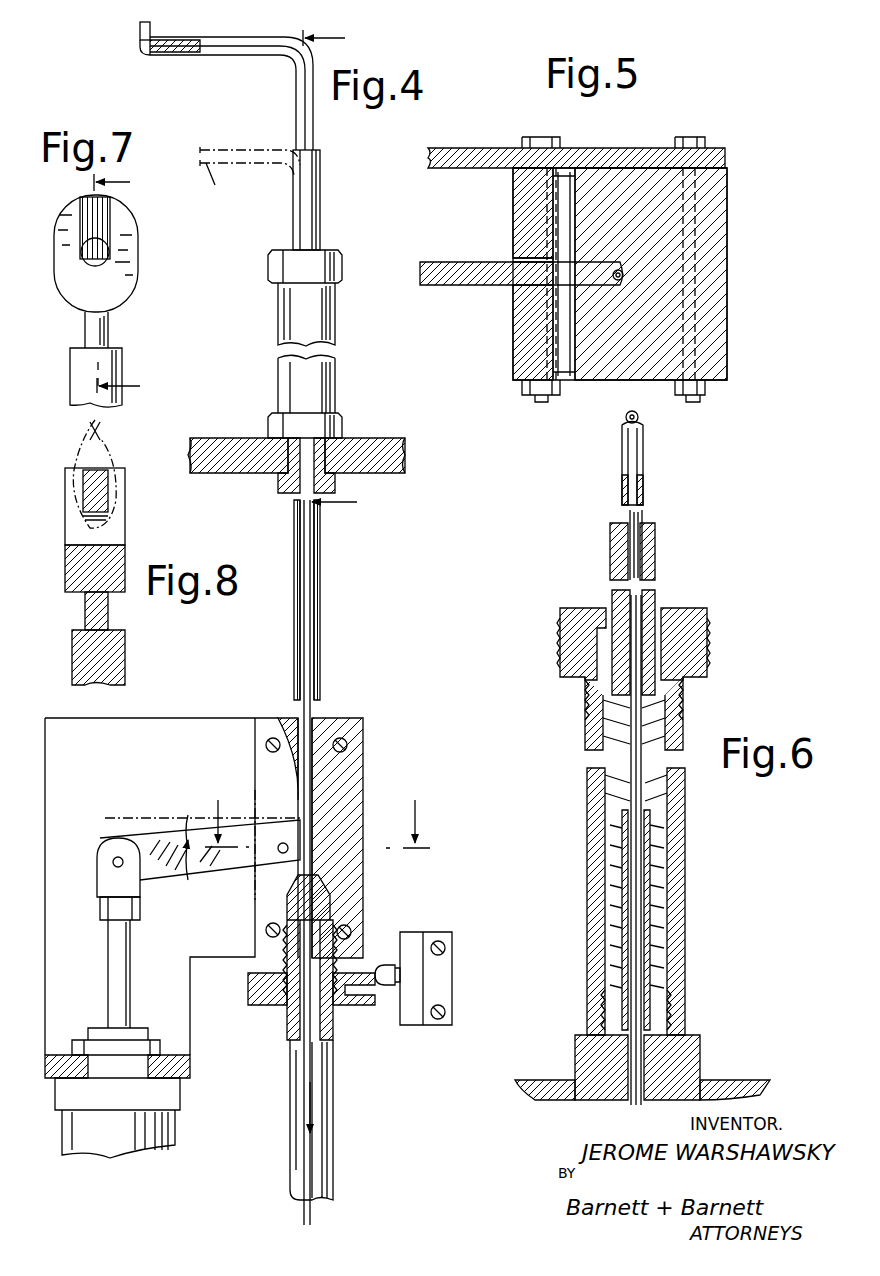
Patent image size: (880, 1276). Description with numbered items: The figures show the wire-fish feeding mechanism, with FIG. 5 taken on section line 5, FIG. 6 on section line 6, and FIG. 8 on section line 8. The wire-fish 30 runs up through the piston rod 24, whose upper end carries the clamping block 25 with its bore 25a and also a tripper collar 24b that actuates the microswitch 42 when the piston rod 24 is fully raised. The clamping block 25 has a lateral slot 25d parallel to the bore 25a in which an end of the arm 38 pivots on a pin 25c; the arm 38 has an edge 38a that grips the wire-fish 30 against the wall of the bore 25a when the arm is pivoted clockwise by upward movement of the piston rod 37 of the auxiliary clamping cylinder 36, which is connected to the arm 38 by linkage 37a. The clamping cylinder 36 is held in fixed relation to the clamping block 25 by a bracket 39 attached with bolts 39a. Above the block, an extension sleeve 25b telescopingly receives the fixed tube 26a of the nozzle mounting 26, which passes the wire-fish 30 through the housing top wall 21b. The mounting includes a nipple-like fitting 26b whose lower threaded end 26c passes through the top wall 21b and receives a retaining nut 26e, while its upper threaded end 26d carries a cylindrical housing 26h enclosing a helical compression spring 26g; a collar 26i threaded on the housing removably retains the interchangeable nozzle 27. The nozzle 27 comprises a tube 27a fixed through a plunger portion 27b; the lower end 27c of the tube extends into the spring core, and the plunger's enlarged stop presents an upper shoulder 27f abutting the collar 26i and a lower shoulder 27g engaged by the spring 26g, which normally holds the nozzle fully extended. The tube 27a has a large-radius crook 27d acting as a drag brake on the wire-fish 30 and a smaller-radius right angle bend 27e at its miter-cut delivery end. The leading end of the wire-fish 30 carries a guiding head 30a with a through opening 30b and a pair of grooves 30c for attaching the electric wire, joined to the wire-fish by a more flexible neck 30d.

In FIG. 4, the section line 5— 5 is at (317, 810).
In FIG. 4, the section line 6— 6 is at (343, 272).
In FIG. 7, the section line 8— 8 is at (127, 286).
In FIG. 6, the top wall 21b is at (555, 1082).
In FIG. 4, the piston rod 24 is at (290, 1072).
In FIG. 4, the tripper collar 24b is at (250, 985).
In FIG. 5, the clamping block 25 is at (720, 281).
In FIG. 4, the bore 25a is at (345, 762).
In FIG. 5, the bore 25a is at (625, 268).
In FIG. 4, the extension sleeve 25b is at (320, 630).
In FIG. 4, the pin 25c is at (280, 880).
In FIG. 5, the pin 25c is at (562, 322).
In FIG. 4, the lateral slot 25d is at (262, 768).
In FIG. 5, the lateral slot 25d is at (515, 262).
In FIG. 4, the nozzle mounting 26 is at (337, 313).
In FIG. 6, the nozzle mounting 26 is at (690, 925).
In FIG. 4, the fixed tube 26a is at (320, 536).
In FIG. 4, the nipple-like fitting 26b is at (340, 422).
In FIG. 6, the nipple-like fitting 26b is at (700, 1048).
In FIG. 4, the lower threaded end 26c is at (330, 486).
In FIG. 6, the upper threaded end 26d is at (662, 1003).
In FIG. 4, the retaining nut 26e is at (280, 483).
In FIG. 6, the helical compression spring 26g is at (660, 864).
In FIG. 4, the cylindrical housing 26h is at (322, 377).
In FIG. 6, the cylindrical housing 26h is at (686, 826).
In FIG. 4, the collar 26i is at (342, 265).
In FIG. 6, the collar 26i is at (707, 652).
In FIG. 4, the nozzle 27 is at (288, 150).
In FIG. 4, the tube 27a is at (226, 40).
In FIG. 4, the plunger portion 27b is at (318, 218).
In FIG. 6, the plunger portion 27b is at (660, 602).
In FIG. 6, the lower end 27c is at (660, 788).
In FIG. 4, the crook 27d is at (287, 58).
In FIG. 6, the crook 27d is at (640, 455).
In FIG. 4, the right angle bend 27e is at (140, 48).
In FIG. 6, the upper shoulder 27f is at (665, 620).
In FIG. 6, the lower shoulder 27g is at (650, 706).
In FIG. 7, the wire-fish 30 is at (118, 362).
In FIG. 8, the wire-fish 30 is at (72, 650).
In FIG. 4, the wire-fish 30 is at (310, 706).
In FIG. 5, the wire-fish 30 is at (622, 277).
In FIG. 6, the wire-fish 30 is at (644, 522).
In FIG. 7, the guiding head 30a is at (136, 274).
In FIG. 8, the guiding head 30a is at (65, 568).
In FIG. 4, the guiding head 30a is at (140, 28).
In FIG. 6, the guiding head 30a is at (640, 420).
In FIG. 7, the through opening 30b is at (88, 258).
In FIG. 8, the through opening 30b is at (95, 545).
In FIG. 7, the grooves 30c is at (104, 225).
In FIG. 8, the grooves 30c is at (83, 494).
In FIG. 7, the neck 30d is at (108, 325).
In FIG. 8, the neck 30d is at (85, 615).
In FIG. 4, the auxiliary clamping cylinder 36 is at (72, 1130).
In FIG. 4, the piston rod 37 is at (108, 985).
In FIG. 4, the linkage 37a is at (100, 888).
In FIG. 4, the arm 38 is at (160, 838).
In FIG. 5, the arm 38 is at (448, 285).
In FIG. 4, the edge 38a is at (304, 822).
In FIG. 5, the edge 38a is at (622, 282).
In FIG. 4, the bracket 39 is at (170, 745).
In FIG. 5, the bracket 39 is at (462, 155).
In FIG. 5, the bolts 39a is at (540, 137).
In FIG. 4, the microswitch 42 is at (414, 1018).